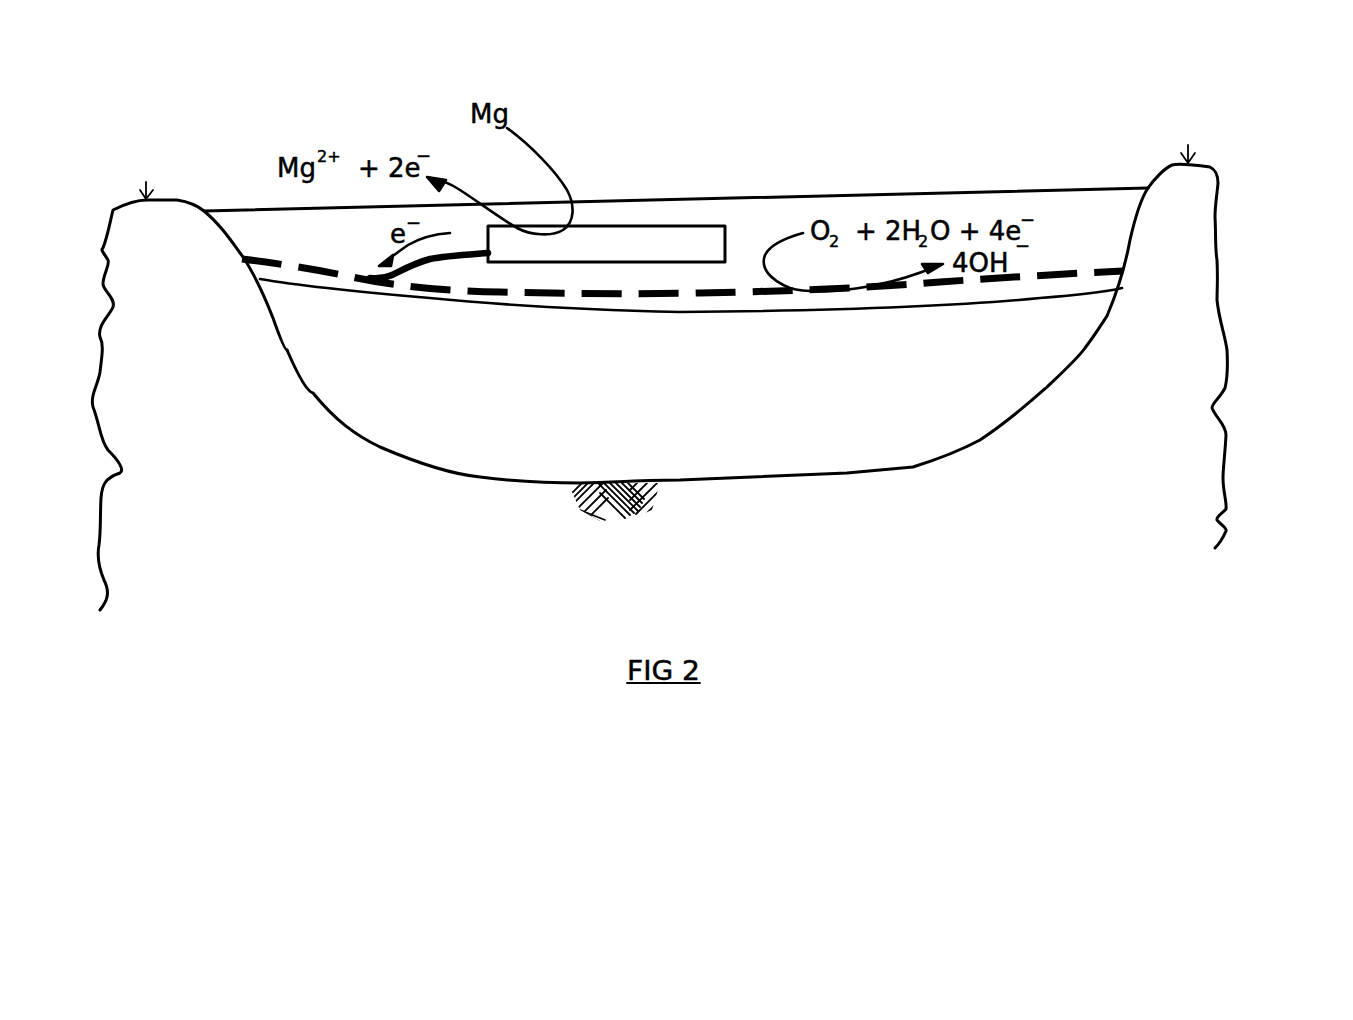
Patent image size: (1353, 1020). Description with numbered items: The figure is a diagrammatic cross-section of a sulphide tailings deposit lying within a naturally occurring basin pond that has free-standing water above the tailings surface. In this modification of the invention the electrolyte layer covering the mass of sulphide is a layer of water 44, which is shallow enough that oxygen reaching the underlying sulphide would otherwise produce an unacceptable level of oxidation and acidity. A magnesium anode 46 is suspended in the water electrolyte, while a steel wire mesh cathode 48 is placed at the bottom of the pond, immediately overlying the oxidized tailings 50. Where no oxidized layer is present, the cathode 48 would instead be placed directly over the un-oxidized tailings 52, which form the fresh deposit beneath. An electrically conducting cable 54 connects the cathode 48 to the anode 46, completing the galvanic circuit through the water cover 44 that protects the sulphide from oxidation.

The layer of water 44 is at (1087, 232).
The magnesium anode 46 is at (682, 243).
The steel wire mesh cathode 48 is at (319, 273).
The oxidized tailings 50 is at (597, 303).
The un-oxidized tailings 52 is at (690, 411).
The electrically conducting cable 54 is at (425, 259).